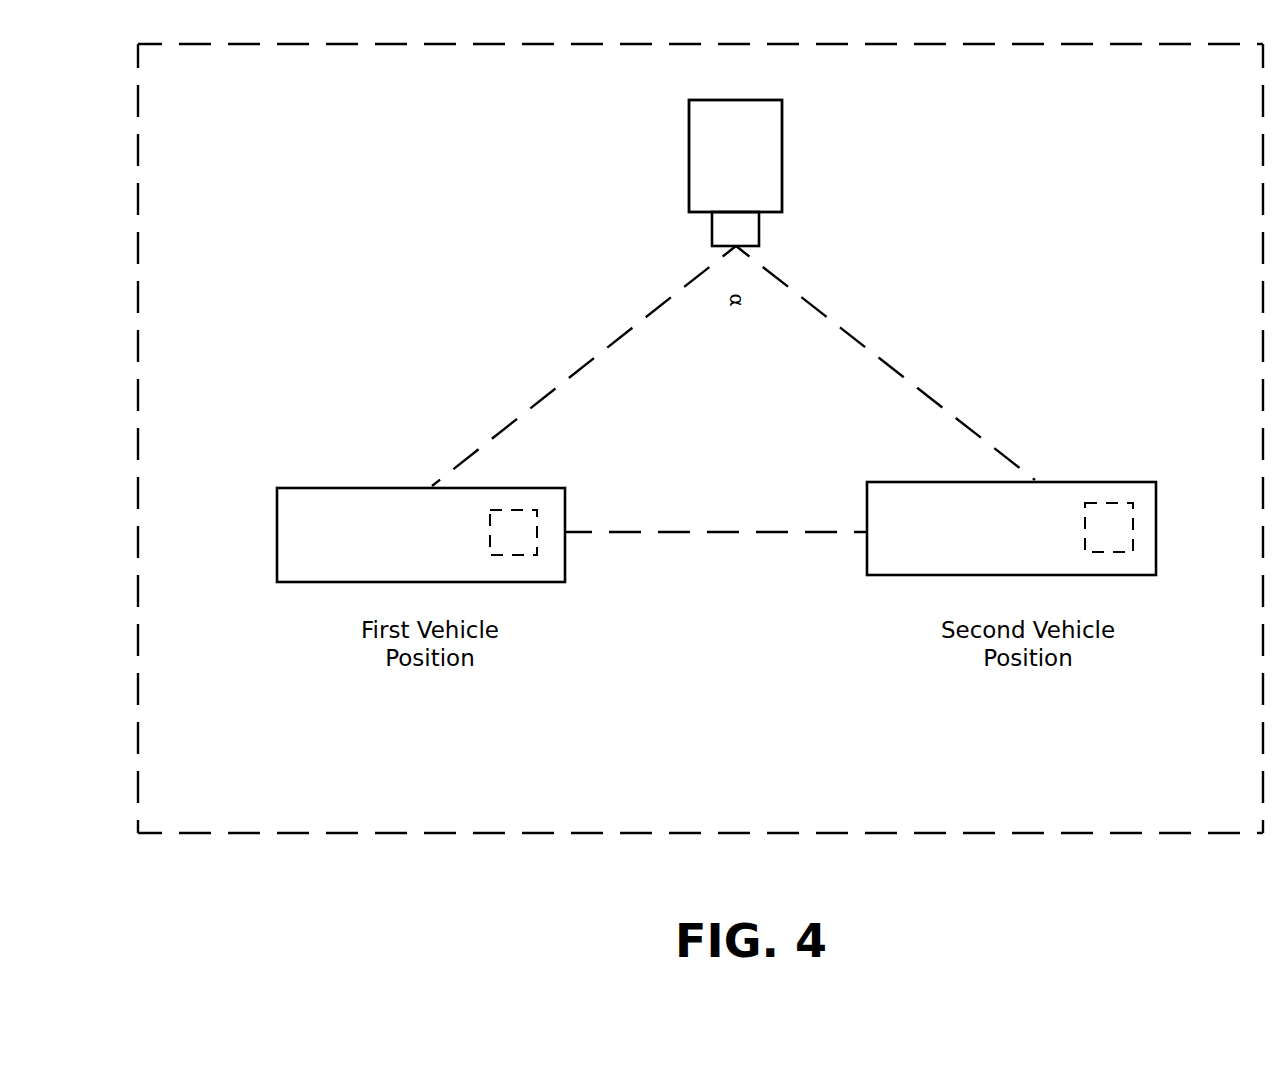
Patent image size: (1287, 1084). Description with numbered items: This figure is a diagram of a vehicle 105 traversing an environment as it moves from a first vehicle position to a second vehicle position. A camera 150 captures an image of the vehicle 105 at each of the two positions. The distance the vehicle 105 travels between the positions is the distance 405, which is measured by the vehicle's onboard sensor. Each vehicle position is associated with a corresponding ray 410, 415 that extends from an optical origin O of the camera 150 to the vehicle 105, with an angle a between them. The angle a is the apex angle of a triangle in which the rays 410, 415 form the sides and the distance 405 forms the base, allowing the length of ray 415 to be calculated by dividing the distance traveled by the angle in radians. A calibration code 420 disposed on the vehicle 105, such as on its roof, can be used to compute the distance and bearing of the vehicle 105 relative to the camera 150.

The vehicle 105 is at (390, 488).
The camera 150 is at (782, 167).
The distance 405 is at (700, 533).
The ray 410 is at (570, 368).
The ray 415 is at (907, 370).
The calibration code 420 is at (513, 558).